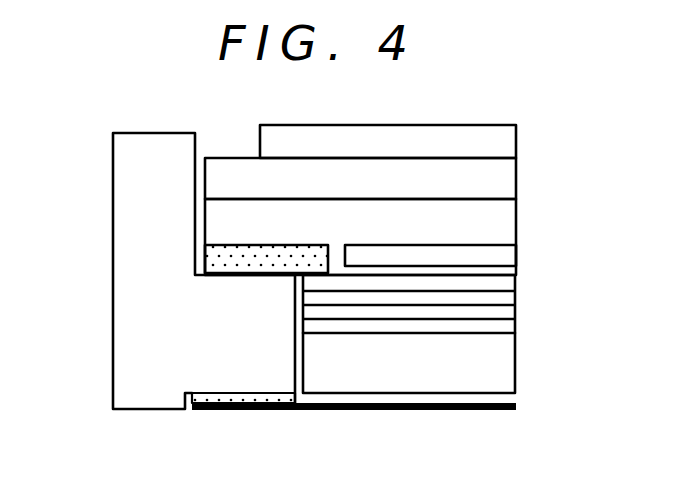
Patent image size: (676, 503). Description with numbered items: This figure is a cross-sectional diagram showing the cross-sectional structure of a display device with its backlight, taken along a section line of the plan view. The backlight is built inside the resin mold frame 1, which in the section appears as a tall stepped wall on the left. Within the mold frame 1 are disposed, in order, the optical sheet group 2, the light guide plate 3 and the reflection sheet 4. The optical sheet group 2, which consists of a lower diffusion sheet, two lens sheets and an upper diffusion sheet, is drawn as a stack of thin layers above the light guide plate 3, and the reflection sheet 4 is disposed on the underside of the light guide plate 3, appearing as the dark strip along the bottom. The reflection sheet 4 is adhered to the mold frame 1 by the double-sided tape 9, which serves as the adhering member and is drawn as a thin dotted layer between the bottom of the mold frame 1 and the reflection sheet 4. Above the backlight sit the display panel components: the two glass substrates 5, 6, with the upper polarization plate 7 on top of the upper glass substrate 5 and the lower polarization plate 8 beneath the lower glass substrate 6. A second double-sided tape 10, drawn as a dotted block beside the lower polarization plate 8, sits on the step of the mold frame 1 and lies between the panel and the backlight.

The resin mold frame 1 is at (123, 309).
The optical sheet group 2 is at (519, 275).
The light guide plate 3 is at (482, 359).
The reflection sheet 4 is at (358, 411).
The glass substrate 5 is at (500, 178).
The glass substrate 6 is at (502, 220).
The upper polarization plate 7 is at (500, 140).
The lower polarization plate 8 is at (508, 253).
The double-sided tape 9 is at (230, 404).
The double-sided tape 10 is at (212, 263).